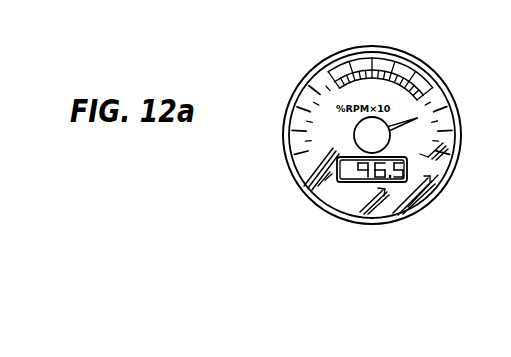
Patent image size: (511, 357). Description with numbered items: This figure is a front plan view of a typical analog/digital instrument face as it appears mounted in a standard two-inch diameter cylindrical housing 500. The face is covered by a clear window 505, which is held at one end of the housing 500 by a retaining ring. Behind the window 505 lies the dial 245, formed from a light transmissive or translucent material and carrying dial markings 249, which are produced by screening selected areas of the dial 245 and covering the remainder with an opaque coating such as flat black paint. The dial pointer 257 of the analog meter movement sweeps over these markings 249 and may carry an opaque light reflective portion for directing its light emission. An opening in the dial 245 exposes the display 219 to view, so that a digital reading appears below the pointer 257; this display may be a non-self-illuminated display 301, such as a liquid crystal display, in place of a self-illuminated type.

The cylindrical housing 500 is at (295, 102).
The dial pointer 257 is at (314, 145).
The dial 245 is at (318, 174).
The clear window 505 is at (330, 203).
The dial markings 249 is at (414, 92).
The display 219 is at (417, 173).
The non-self-illuminated display 301 is at (452, 181).